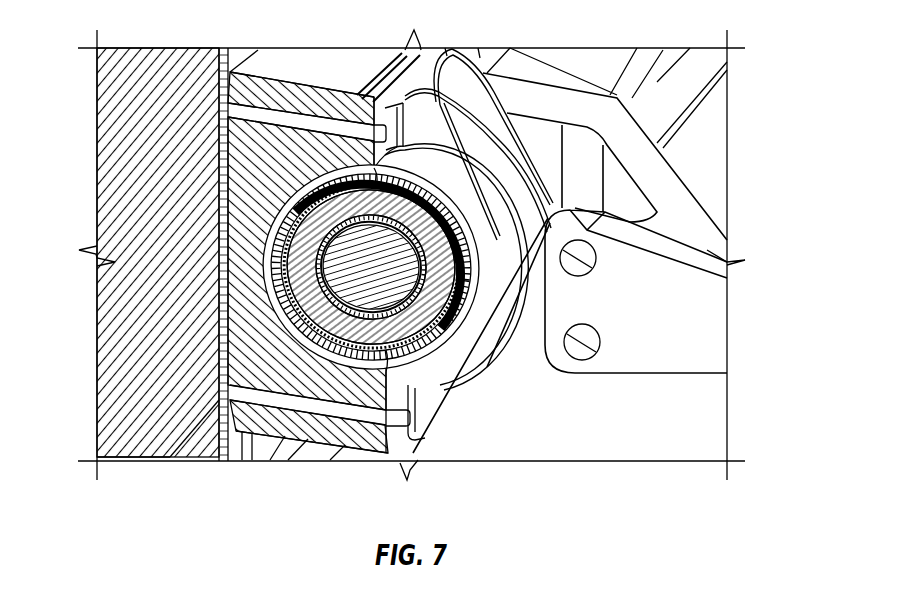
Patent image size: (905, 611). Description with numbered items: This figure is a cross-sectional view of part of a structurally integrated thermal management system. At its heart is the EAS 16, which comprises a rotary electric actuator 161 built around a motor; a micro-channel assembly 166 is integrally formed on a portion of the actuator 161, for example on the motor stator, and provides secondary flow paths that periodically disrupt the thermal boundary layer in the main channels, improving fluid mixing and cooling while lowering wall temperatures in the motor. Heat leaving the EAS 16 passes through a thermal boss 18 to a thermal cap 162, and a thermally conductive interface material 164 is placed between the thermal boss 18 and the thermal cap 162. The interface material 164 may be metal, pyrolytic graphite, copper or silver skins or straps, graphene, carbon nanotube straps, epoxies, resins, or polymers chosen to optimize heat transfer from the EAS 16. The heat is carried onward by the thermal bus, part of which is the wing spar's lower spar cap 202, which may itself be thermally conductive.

The EAS 16 is at (137, 337).
The thermal boss 18 is at (247, 193).
The rotary electric actuator 161 is at (568, 100).
The lower spar cap 202 is at (697, 105).
The micro-channel assembly 166 is at (443, 340).
The thermal cap 162 is at (432, 397).
The thermally conductive interface material 164 is at (386, 378).